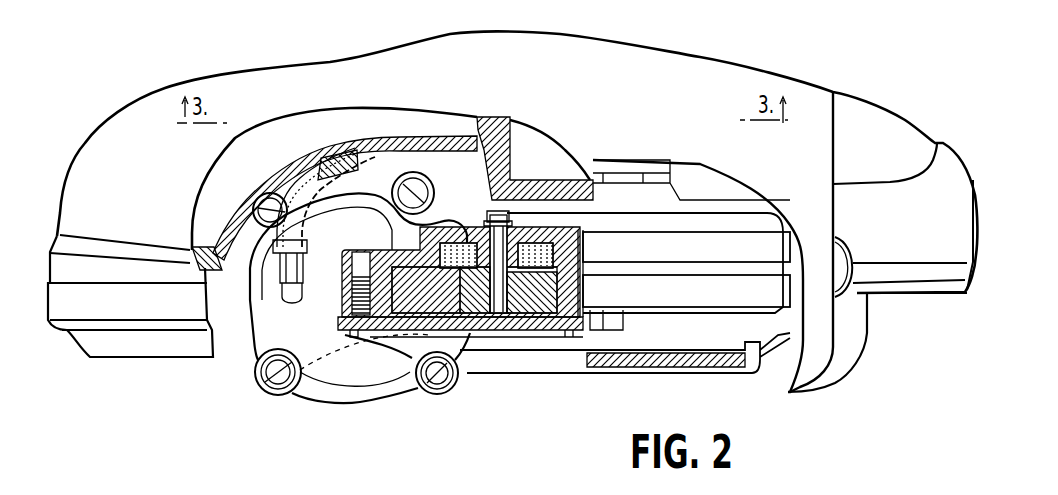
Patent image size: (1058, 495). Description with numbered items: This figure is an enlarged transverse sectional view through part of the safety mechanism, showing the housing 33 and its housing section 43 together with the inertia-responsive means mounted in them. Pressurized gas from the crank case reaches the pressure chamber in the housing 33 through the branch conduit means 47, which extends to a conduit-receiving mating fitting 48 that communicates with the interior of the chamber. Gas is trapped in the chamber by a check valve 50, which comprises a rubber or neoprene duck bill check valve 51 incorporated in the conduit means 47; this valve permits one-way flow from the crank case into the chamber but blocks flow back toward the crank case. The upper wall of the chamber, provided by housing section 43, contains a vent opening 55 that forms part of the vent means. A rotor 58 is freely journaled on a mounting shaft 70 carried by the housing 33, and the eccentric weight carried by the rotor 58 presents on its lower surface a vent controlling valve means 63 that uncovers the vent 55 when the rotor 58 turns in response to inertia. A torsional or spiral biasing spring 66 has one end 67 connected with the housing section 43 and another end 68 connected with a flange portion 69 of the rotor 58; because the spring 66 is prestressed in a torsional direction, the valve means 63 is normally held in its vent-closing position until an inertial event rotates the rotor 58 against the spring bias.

The housing 33 is at (327, 366).
The housing section 43 is at (392, 262).
The branch conduit means 47 is at (293, 182).
The mating fitting 48 is at (281, 307).
The check valve 50 is at (324, 145).
The duck bill check valve 51 is at (408, 158).
The vent opening 55 is at (430, 335).
The rotor 58 is at (533, 312).
The vent controlling valve means 63 is at (406, 363).
The torsional spring 66 is at (552, 243).
The spring end 67 is at (478, 228).
The spring end 68 is at (578, 257).
The flange portion 69 is at (560, 272).
The mounting shaft 70 is at (496, 310).